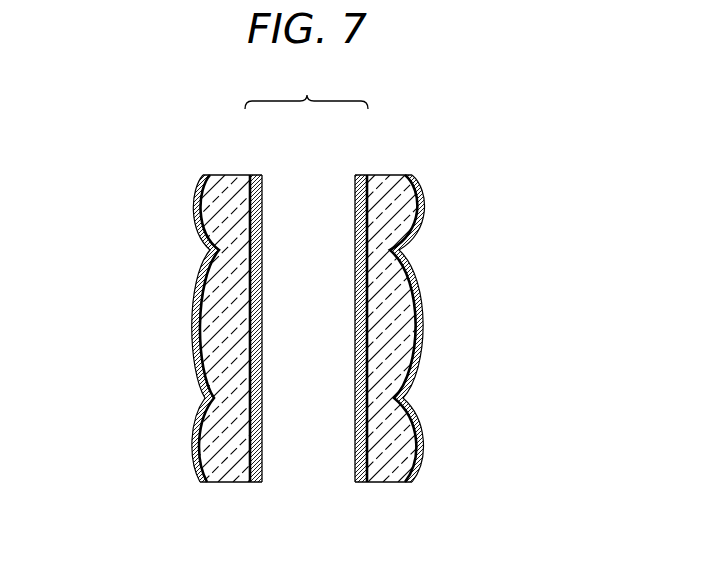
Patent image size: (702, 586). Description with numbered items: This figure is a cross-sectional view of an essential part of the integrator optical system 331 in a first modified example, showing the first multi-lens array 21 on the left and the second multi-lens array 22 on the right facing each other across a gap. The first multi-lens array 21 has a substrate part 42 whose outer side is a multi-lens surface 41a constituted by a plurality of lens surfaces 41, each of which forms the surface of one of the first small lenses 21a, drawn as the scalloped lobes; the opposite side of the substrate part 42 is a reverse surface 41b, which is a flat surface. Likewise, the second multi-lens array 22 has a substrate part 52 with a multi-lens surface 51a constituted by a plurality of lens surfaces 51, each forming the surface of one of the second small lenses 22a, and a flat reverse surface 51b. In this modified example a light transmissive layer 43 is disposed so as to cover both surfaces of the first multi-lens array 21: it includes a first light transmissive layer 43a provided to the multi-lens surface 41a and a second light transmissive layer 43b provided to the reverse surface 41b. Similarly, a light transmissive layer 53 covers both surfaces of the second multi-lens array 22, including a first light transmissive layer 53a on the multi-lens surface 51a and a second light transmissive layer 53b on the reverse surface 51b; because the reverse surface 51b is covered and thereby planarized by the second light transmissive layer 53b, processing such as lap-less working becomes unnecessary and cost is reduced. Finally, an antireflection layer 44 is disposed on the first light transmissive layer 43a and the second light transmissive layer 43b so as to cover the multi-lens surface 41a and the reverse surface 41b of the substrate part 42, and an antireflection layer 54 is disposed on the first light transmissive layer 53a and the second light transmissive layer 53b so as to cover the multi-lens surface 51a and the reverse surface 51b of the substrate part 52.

The integrator optical system 331 is at (307, 95).
The first multi-lens array 21 is at (232, 170).
The first small lens 21a is at (224, 385).
The second multi-lens array 22 is at (385, 172).
The second small lens 22a is at (393, 384).
The lens surface 41 is at (201, 328).
The multi-lens surface 41a is at (173, 328).
The reverse surface 41b is at (262, 259).
The substrate part 42 is at (191, 221).
The light transmissive layer 43 is at (191, 378).
The first light transmissive layer 43a is at (154, 328).
The second light transmissive layer 43b is at (261, 378).
The antireflection layer 44 is at (191, 276).
The lens surface 51 is at (416, 328).
The multi-lens surface 51a is at (443, 328).
The reverse surface 51b is at (356, 273).
The substrate part 52 is at (427, 221).
The light transmissive layer 53 is at (426, 378).
The first light transmissive layer 53a is at (457, 328).
The second light transmissive layer 53b is at (357, 378).
The antireflection layer 54 is at (424, 276).